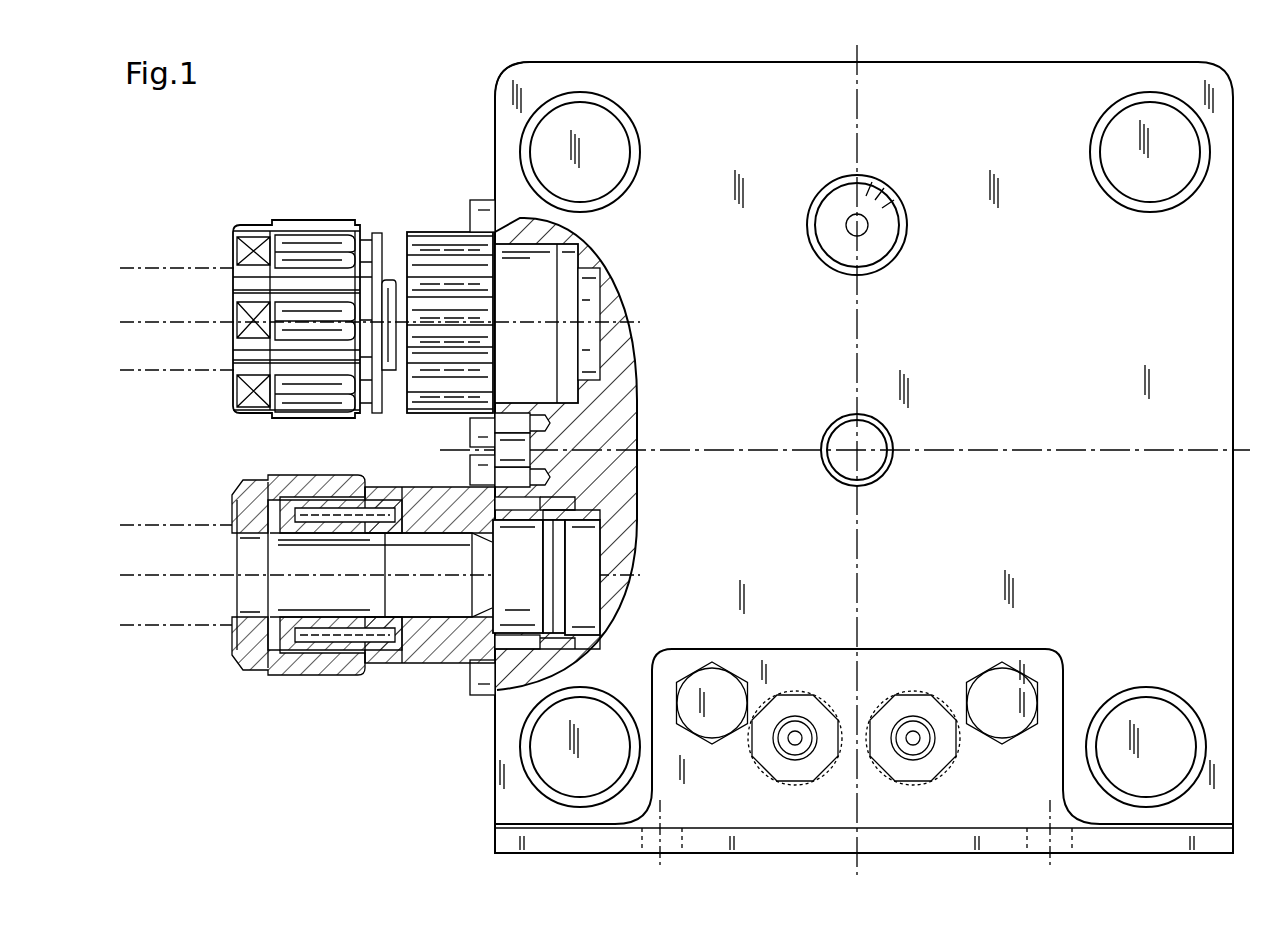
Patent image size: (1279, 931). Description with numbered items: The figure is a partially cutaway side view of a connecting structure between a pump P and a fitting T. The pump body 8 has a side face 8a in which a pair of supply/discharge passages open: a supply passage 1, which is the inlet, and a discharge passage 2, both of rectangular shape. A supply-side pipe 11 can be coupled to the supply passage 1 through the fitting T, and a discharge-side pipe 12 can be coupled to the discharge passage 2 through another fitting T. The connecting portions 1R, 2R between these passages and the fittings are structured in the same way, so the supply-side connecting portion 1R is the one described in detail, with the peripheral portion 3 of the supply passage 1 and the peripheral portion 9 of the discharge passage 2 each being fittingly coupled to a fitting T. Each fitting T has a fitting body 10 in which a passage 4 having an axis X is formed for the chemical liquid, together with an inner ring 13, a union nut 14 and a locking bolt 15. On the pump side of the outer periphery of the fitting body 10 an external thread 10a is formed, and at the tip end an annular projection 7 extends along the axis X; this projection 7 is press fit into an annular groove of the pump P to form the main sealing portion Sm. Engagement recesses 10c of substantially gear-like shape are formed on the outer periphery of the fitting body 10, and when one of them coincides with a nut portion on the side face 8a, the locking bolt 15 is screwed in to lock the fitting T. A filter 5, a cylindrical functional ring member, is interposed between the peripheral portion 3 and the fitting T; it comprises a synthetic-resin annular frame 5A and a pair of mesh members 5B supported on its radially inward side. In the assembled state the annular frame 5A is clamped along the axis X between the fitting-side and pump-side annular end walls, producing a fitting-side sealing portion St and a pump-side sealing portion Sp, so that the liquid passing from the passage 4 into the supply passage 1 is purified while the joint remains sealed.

The supply passage 1 is at (623, 548).
The supply-side connecting portion 1R is at (456, 482).
The discharge passage 2 is at (625, 330).
The connecting portion 2R is at (470, 221).
The peripheral portion 3 is at (462, 455).
The passage 4 is at (411, 576).
The filter 5 is at (535, 538).
The annular frame 5A is at (580, 510).
The mesh members 5B is at (540, 556).
The annular projection 7 is at (577, 320).
The pump body 8 is at (1210, 390).
The side face 8a is at (492, 795).
The peripheral portion 9 is at (498, 150).
The fitting body 10 is at (415, 664).
The external thread 10a is at (545, 290).
The engagement recesses 10c is at (450, 320).
The supply-side pipe 11 is at (200, 625).
The discharge-side pipe 12 is at (190, 268).
The inner ring 13 is at (305, 626).
The union nut 14 is at (242, 226).
The locking bolt 15 is at (550, 446).
The pump P is at (492, 107).
The sealing portion Sm is at (576, 500).
The pump-side sealing portion Sp is at (520, 656).
The fitting-side sealing portion St is at (522, 648).
The fitting T is at (298, 226).
The axis X is at (205, 322).